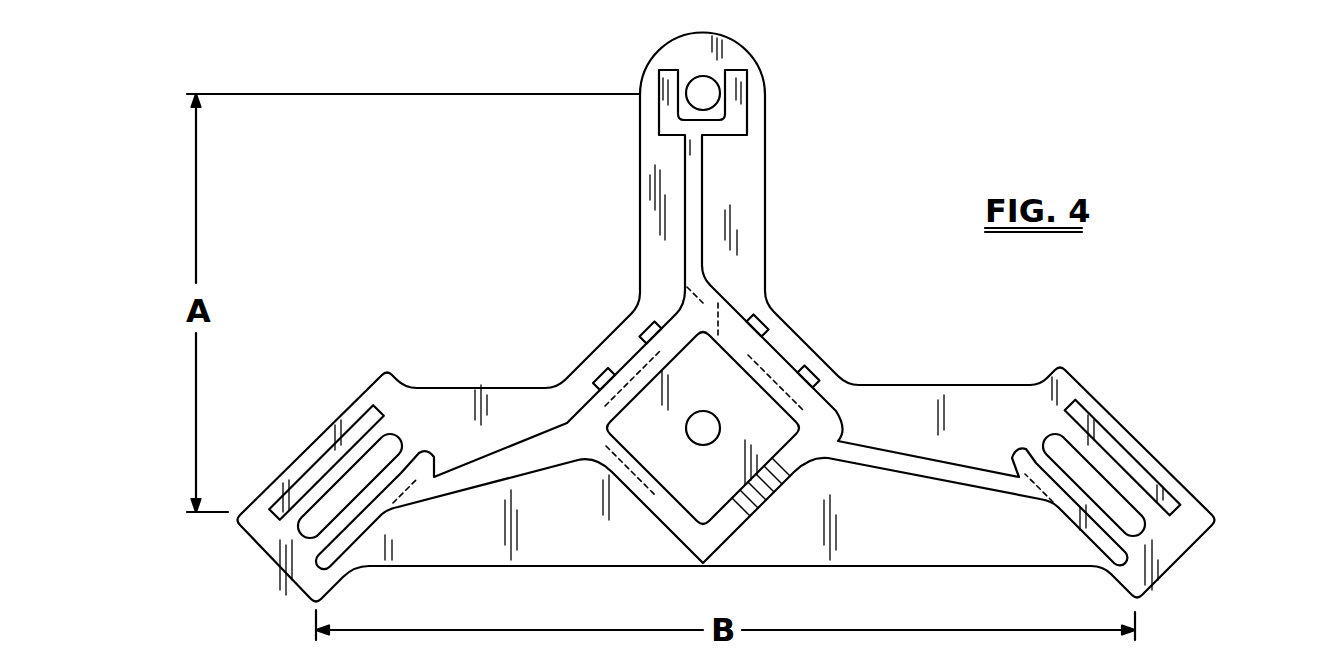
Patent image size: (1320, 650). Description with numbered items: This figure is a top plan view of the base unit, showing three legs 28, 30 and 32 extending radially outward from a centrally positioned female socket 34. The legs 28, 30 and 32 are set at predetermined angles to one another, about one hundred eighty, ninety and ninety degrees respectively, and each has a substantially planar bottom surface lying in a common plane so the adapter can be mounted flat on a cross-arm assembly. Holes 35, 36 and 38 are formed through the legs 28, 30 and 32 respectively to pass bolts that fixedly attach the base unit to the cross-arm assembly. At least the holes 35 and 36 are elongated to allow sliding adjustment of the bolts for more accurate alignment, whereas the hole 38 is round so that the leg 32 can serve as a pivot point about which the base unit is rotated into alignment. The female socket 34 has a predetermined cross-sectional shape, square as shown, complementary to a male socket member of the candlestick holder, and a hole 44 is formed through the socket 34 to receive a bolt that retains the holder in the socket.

The leg 28 is at (1195, 510).
The leg 30 is at (323, 437).
The leg 32 is at (760, 237).
The female socket 34 is at (822, 425).
The hole 35 is at (1122, 516).
The hole 36 is at (318, 523).
The hole 38 is at (716, 102).
The hole 44 is at (628, 358).